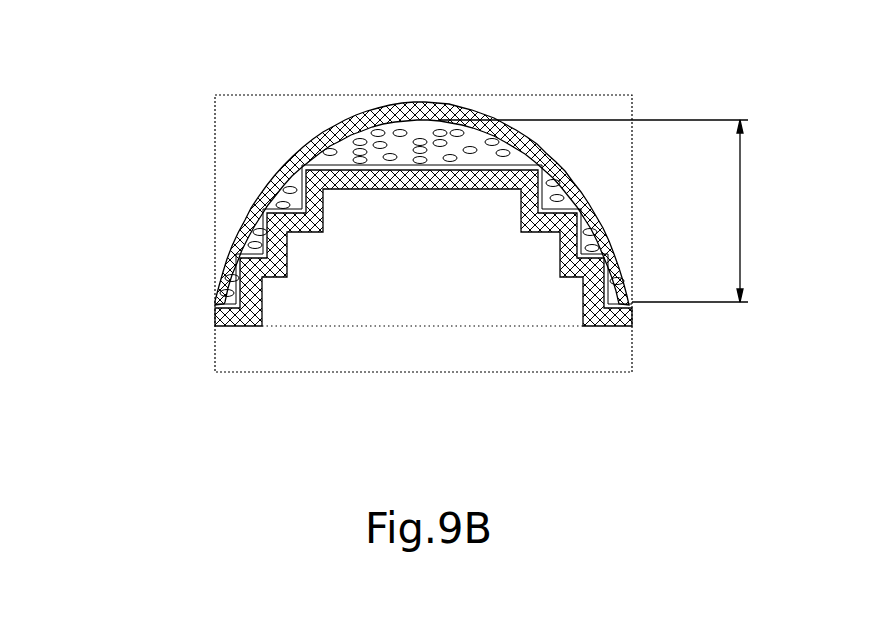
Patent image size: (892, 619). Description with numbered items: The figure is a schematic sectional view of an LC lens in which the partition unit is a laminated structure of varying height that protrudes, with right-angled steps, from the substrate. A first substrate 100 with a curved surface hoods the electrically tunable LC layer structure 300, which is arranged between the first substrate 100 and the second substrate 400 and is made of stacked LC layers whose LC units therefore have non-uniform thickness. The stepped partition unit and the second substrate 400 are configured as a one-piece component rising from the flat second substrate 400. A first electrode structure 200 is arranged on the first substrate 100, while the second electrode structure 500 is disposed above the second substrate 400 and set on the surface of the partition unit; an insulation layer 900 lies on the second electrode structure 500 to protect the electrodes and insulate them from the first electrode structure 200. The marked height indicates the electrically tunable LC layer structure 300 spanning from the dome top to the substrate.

The first substrate 100 is at (290, 110).
The first electrode structure 200 is at (268, 195).
The electrically tunable LC layer structure 300 is at (593, 211).
The second substrate 400 is at (530, 352).
The second electrode structure 500 is at (236, 323).
The insulation layer 900 is at (220, 305).